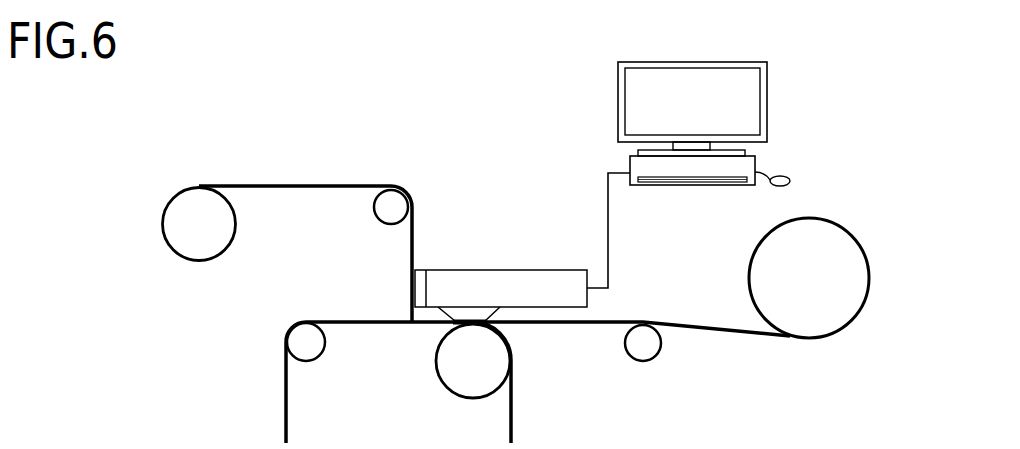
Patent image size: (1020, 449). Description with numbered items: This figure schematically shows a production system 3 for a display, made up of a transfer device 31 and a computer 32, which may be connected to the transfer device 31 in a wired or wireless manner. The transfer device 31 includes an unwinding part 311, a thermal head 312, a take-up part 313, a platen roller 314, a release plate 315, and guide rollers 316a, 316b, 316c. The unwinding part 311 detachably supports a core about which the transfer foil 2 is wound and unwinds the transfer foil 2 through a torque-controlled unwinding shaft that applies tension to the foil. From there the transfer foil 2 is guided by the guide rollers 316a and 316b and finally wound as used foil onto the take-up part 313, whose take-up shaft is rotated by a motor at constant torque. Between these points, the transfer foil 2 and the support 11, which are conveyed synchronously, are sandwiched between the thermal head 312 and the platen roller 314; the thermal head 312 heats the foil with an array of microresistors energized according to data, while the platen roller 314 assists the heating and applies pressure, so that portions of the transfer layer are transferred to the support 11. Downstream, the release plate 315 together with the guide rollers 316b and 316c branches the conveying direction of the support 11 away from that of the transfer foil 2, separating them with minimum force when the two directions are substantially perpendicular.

The transfer foil 2 is at (727, 334).
The production system 3 is at (726, 165).
The support 11 is at (512, 401).
The transfer device 31 is at (391, 138).
The computer 32 is at (771, 108).
The unwinding part 311 is at (850, 272).
The thermal head 312 is at (477, 269).
The take-up part 313 is at (176, 220).
The platen roller 314 is at (446, 366).
The release plate 315 is at (412, 290).
The guide roller 316a is at (643, 348).
The guide roller 316b is at (393, 210).
The guide roller 316c is at (296, 343).